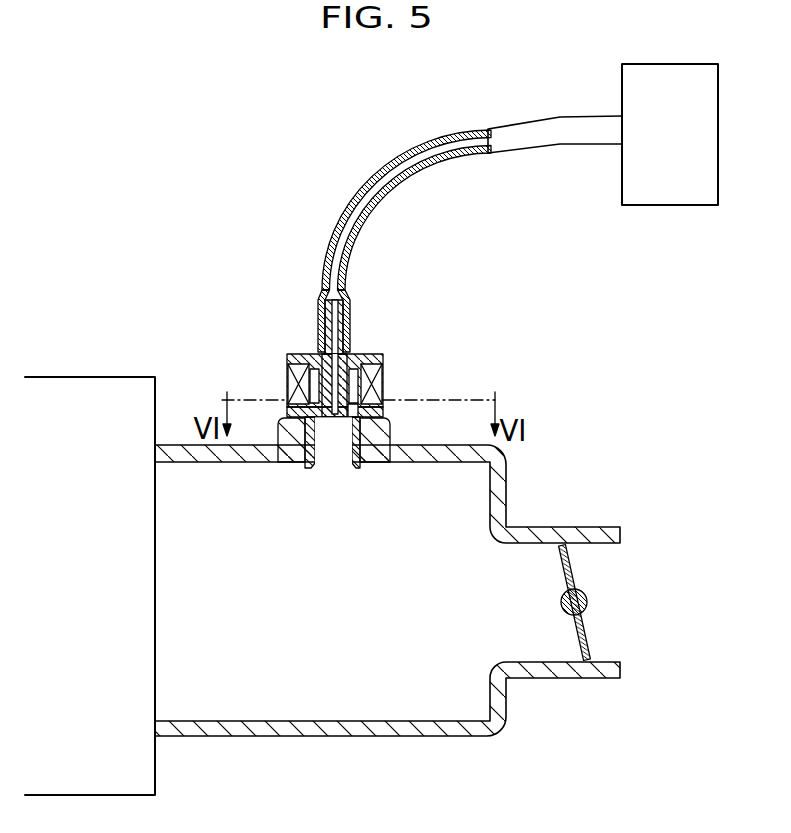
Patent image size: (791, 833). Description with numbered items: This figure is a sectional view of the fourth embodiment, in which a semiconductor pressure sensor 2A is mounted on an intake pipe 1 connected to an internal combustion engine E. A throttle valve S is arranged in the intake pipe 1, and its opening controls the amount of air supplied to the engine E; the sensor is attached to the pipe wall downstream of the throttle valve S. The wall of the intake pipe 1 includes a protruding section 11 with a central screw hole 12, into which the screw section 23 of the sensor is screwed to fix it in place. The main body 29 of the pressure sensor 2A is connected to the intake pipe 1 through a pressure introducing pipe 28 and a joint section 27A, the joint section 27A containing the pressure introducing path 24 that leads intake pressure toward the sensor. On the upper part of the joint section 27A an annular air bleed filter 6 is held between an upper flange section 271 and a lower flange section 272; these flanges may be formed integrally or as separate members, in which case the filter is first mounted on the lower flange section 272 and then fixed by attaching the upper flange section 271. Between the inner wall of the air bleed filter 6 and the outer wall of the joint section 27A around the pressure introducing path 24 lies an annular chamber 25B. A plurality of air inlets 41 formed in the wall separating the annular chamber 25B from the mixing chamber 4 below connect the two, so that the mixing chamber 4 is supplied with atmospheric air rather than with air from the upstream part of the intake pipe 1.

The intake pipe 1 is at (507, 477).
The pressure sensor 2A is at (548, 113).
The mixing chamber 4 is at (333, 455).
The air bleed filter 6 is at (382, 371).
The protruding section 11 is at (278, 426).
The screw hole 12 is at (313, 469).
The screw section 23 is at (356, 468).
The pressure introducing path 24 is at (333, 416).
The annular chamber 25B is at (352, 378).
The joint section 27A is at (307, 347).
The pressure introducing pipe 28 is at (411, 173).
The main body 29 is at (665, 208).
The air inlets 41 is at (352, 408).
The upper flange section 271 is at (287, 356).
The lower flange section 272 is at (300, 410).
The internal combustion engine E is at (97, 386).
The throttle valve S is at (589, 639).